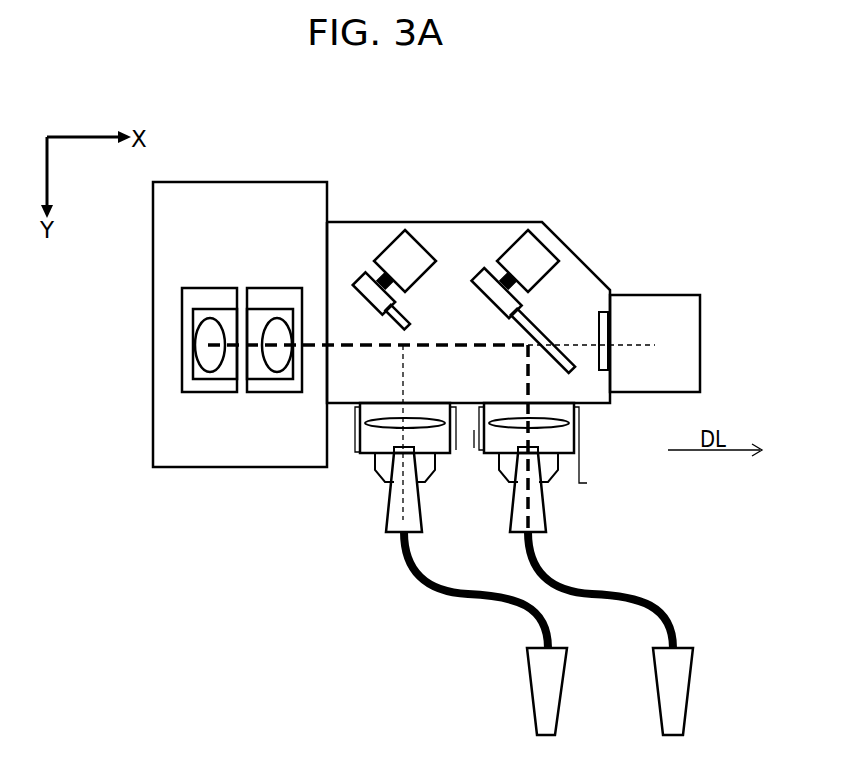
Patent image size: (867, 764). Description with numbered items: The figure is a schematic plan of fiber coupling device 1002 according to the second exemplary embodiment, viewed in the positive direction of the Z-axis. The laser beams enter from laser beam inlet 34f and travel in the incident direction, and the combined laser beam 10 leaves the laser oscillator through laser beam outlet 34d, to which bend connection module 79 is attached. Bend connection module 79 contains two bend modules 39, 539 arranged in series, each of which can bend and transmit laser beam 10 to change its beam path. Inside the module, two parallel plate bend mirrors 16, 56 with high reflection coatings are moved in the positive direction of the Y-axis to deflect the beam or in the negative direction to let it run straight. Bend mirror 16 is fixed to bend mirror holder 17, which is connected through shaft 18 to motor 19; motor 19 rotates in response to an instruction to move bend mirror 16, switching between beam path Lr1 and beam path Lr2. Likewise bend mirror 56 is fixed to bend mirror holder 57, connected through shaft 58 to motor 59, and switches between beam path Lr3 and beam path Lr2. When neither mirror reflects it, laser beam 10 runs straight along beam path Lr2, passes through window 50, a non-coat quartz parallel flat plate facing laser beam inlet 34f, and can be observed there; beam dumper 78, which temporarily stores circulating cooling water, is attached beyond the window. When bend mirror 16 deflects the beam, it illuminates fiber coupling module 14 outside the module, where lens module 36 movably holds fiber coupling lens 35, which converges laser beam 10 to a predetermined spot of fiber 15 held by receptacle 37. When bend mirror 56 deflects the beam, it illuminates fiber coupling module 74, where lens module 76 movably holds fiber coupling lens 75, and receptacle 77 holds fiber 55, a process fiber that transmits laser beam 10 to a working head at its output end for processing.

The laser beam 10 is at (353, 347).
The laser beam inlet 34f is at (333, 340).
The laser beam outlet 34d is at (322, 354).
The beam path Lr1 is at (530, 383).
The beam path Lr2 is at (638, 345).
The beam path Lr3 is at (403, 383).
The fiber coupling device 1002 is at (623, 113).
The bend connection module 79 is at (647, 225).
The bend module 539 is at (352, 242).
The bend mirror 16 is at (584, 264).
The motor 59 is at (403, 243).
The shaft 58 is at (380, 275).
The bend mirror holder 57 is at (352, 278).
The bend mirror 56 is at (400, 317).
The motor 19 is at (533, 262).
The shaft 18 is at (510, 268).
The bend mirror holder 17 is at (482, 283).
The bend module 39 is at (540, 323).
The window 50 is at (605, 320).
The beam dumper 78 is at (682, 325).
The lens module 76 is at (345, 499).
The fiber coupling lens 75 is at (380, 427).
The receptacle 77 is at (383, 470).
The fiber coupling module 74 is at (424, 548).
The fiber 55 is at (547, 625).
The lens module 36 is at (524, 487).
The fiber coupling module 14 is at (583, 445).
The receptacle 37 is at (537, 426).
The fiber coupling lens 35 is at (552, 462).
The fiber 15 is at (673, 620).